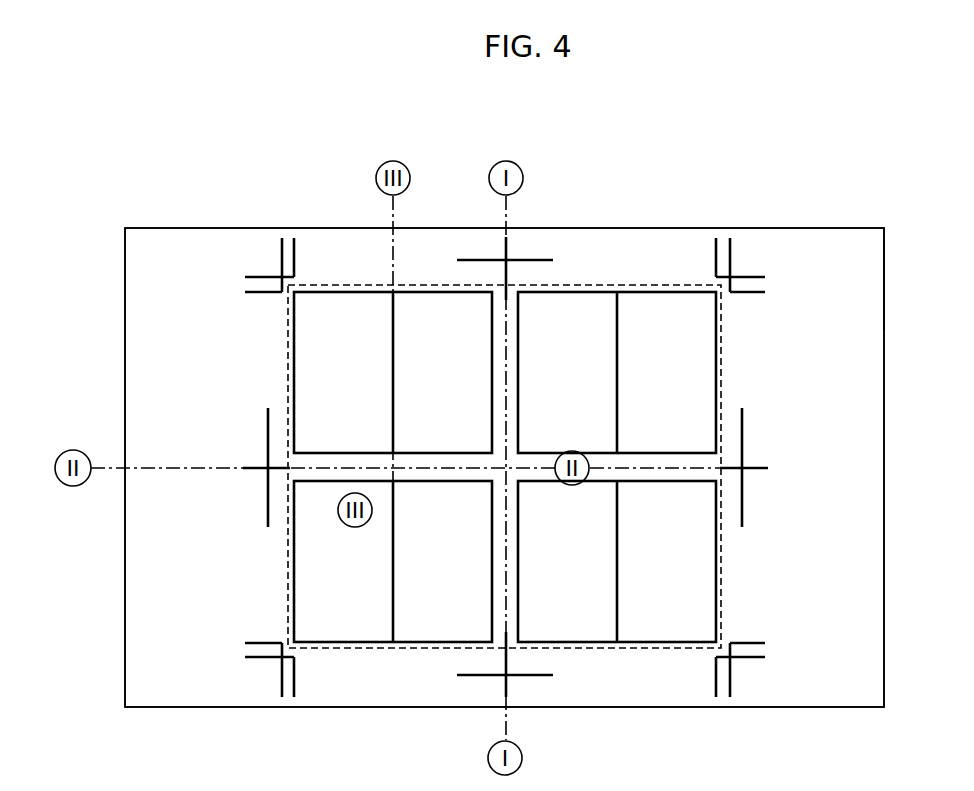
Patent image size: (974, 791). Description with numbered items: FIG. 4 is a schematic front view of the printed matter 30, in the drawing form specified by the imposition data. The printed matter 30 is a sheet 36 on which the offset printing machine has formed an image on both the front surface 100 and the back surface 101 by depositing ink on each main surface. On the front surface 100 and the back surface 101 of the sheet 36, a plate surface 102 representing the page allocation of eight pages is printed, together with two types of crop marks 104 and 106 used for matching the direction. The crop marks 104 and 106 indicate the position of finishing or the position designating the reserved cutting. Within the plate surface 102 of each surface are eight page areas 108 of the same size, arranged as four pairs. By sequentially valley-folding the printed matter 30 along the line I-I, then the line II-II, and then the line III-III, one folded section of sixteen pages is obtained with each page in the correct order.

The printed matter 30 is at (92, 177).
The sheet 36 is at (822, 228).
The front surface 100 is at (864, 270).
The back surface 101 is at (864, 310).
The plate surface 102 is at (322, 285).
The crop mark 104 is at (282, 253).
The crop mark 106 is at (531, 262).
The page area 108 is at (312, 357).